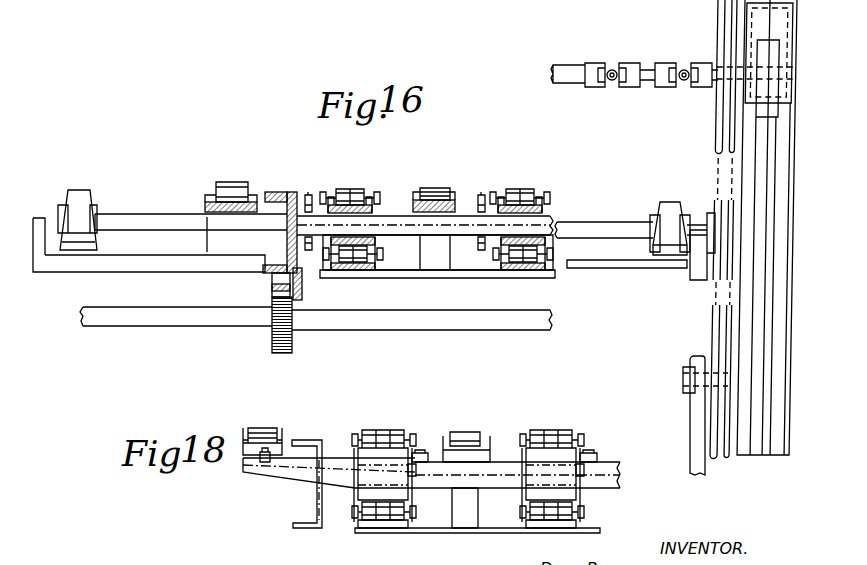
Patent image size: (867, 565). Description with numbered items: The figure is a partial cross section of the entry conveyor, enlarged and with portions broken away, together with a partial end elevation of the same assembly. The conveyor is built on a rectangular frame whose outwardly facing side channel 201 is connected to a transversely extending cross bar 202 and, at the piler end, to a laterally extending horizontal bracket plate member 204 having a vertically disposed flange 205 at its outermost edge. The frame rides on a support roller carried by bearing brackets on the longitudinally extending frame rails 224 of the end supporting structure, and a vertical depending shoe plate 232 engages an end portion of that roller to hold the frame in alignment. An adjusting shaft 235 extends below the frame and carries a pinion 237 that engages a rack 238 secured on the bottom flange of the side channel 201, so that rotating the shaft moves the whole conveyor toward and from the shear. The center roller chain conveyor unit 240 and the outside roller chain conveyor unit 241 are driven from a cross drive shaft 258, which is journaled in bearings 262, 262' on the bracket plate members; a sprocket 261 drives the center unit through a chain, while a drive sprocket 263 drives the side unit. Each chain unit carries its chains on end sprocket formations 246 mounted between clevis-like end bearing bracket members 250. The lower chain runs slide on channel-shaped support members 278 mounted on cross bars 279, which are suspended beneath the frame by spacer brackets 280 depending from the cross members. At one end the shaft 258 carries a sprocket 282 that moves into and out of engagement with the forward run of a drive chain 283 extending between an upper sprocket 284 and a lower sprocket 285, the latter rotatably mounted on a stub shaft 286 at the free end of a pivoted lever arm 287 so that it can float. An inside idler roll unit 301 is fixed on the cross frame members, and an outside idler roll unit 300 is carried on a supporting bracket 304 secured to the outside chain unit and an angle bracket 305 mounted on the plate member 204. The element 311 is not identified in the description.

In FIG. 16, the frame rails 224 is at (193, 6).
In FIG. 16, the flange 205 is at (40, 218).
In FIG. 16, the bracket plate member 204 is at (110, 258).
In FIG. 16, the bearing 262 is at (77, 203).
In FIG. 16, the drive shaft 258 is at (148, 215).
In FIG. 16, the angle bracket 305 is at (211, 243).
In FIG. 16, the idler roll unit 300 is at (235, 178).
In FIG. 18, the idler roll unit 300 is at (265, 425).
In FIG. 16, the side channel 201 is at (276, 192).
In FIG. 18, the side channel 201 is at (305, 440).
In FIG. 16, the drive sprocket 263 is at (310, 193).
In FIG. 16, the roller chain conveyor unit 241 is at (356, 187).
In FIG. 18, the roller chain conveyor unit 241 is at (385, 429).
In FIG. 16, the idler roll unit 301 is at (440, 188).
In FIG. 18, the idler roll unit 301 is at (466, 432).
In FIG. 16, the sprocket 261 is at (481, 194).
In FIG. 16, the roller chain conveyor unit 240 is at (525, 187).
In FIG. 18, the roller chain conveyor unit 240 is at (555, 430).
In FIG. 16, the spacer bracket 280 is at (424, 252).
In FIG. 18, the spacer bracket 280 is at (478, 498).
In FIG. 16, the support member 278 is at (350, 272).
In FIG. 18, the support member 278 is at (381, 528).
In FIG. 16, the cross bar 279 is at (472, 278).
In FIG. 18, the cross bar 279 is at (508, 533).
In FIG. 16, the shoe plate 232 is at (303, 290).
In FIG. 16, the rack 238 is at (272, 286).
In FIG. 16, the pinion 237 is at (272, 341).
In FIG. 16, the adjusting shaft 235 is at (168, 322).
In FIG. 16, the universal joint shaft 311 is at (563, 84).
In FIG. 16, the upper sprocket 284 is at (717, 22).
In FIG. 16, the drive chain 283 is at (718, 166).
In FIG. 16, the lower sprocket 285 is at (718, 325).
In FIG. 16, the bearing 262' is at (661, 216).
In FIG. 16, the sprocket 282 is at (690, 252).
In FIG. 16, the stub shaft 286 is at (683, 378).
In FIG. 16, the lever arm 287 is at (690, 410).
In FIG. 18, the supporting bracket 304 is at (285, 478).
In FIG. 18, the cross bar 202 is at (607, 465).
In FIG. 18, the end sprocket formation 246 is at (400, 455).
In FIG. 18, the end bearing bracket member 250 is at (412, 476).